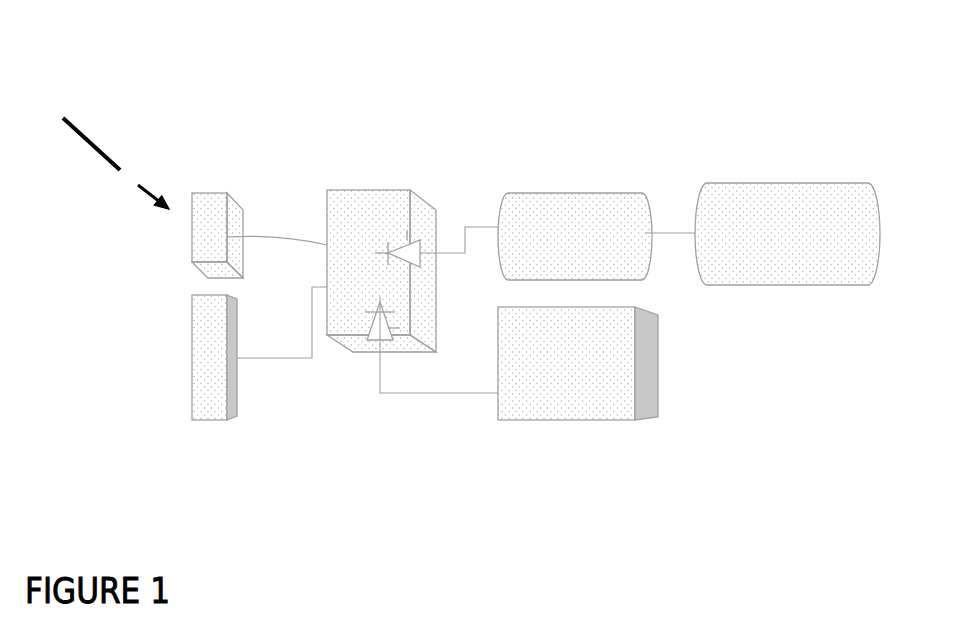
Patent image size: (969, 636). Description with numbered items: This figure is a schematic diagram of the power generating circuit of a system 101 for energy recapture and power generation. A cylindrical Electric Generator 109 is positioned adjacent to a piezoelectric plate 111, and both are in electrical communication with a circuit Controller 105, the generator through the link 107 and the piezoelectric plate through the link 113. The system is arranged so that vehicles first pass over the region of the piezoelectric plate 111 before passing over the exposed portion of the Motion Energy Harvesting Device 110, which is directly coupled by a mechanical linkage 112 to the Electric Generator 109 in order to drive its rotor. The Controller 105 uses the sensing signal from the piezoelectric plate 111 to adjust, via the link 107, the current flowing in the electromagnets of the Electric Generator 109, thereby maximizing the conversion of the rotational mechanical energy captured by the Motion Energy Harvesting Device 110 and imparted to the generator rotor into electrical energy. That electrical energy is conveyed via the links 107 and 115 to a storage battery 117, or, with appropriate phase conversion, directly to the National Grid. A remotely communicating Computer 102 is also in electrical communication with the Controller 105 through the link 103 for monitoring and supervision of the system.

The system for energy recapture and power generation 101 is at (116, 163).
The remotely communicating computer 102 is at (187, 235).
The electrical communication link between computer and controller 103 is at (277, 211).
The circuit controller 105 is at (381, 190).
The electrical communication link between controller and electric generator 107 is at (459, 175).
The cylindrical electric generator 109 is at (575, 171).
The motion energy harvesting device 110 is at (787, 175).
The piezoelectric plate 111 is at (578, 437).
The mechanical linkage 112 is at (670, 173).
The electrical communication link between piezoelectric plate and controller 113 is at (439, 415).
The electrical communication link between controller and storage battery 115 is at (282, 390).
The storage battery 117 is at (131, 374).